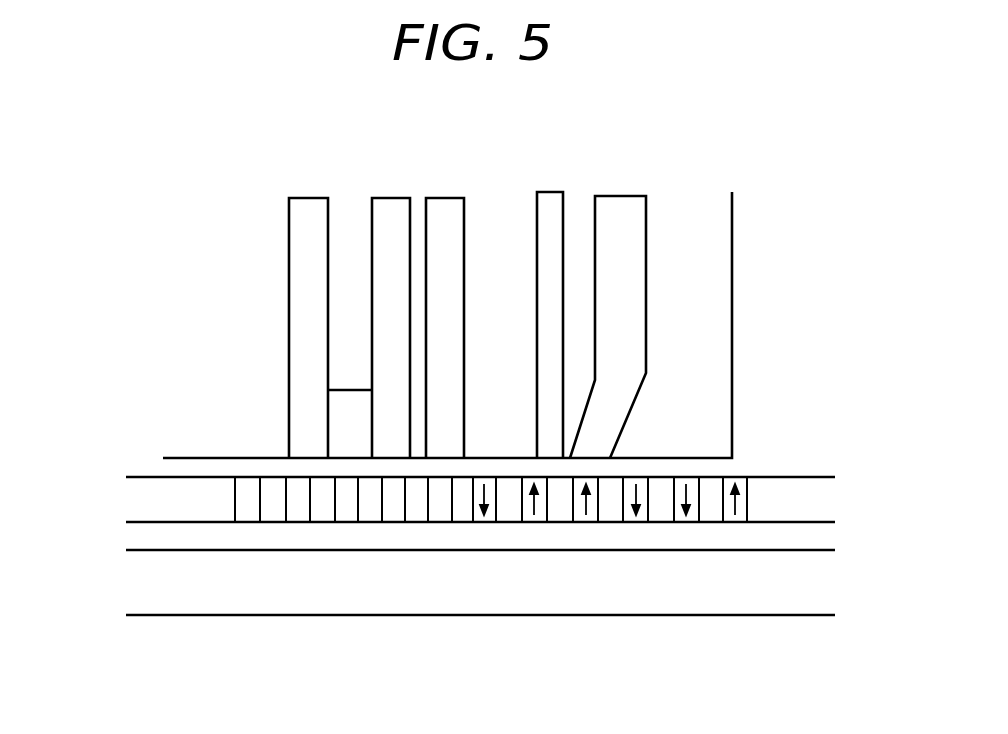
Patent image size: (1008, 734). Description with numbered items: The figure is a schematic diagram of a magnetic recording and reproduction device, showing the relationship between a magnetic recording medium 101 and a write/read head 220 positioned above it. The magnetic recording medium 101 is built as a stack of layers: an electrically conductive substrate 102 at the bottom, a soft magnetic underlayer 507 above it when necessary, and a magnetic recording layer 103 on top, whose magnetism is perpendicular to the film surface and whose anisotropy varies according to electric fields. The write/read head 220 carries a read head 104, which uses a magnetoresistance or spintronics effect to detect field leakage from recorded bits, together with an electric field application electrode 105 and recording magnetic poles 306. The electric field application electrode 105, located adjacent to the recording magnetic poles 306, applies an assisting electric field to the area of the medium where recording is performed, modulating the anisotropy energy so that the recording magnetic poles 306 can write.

The magnetic recording medium 101 is at (855, 620).
The electrically conductive substrate 102 is at (141, 594).
The magnetic recording layer 103 is at (141, 498).
The read head 104 is at (413, 184).
The electric field application electrode 105 is at (550, 196).
The write/read head 220 is at (685, 408).
The recording magnetic poles 306 is at (445, 279).
The soft magnetic underlayer 507 is at (141, 537).